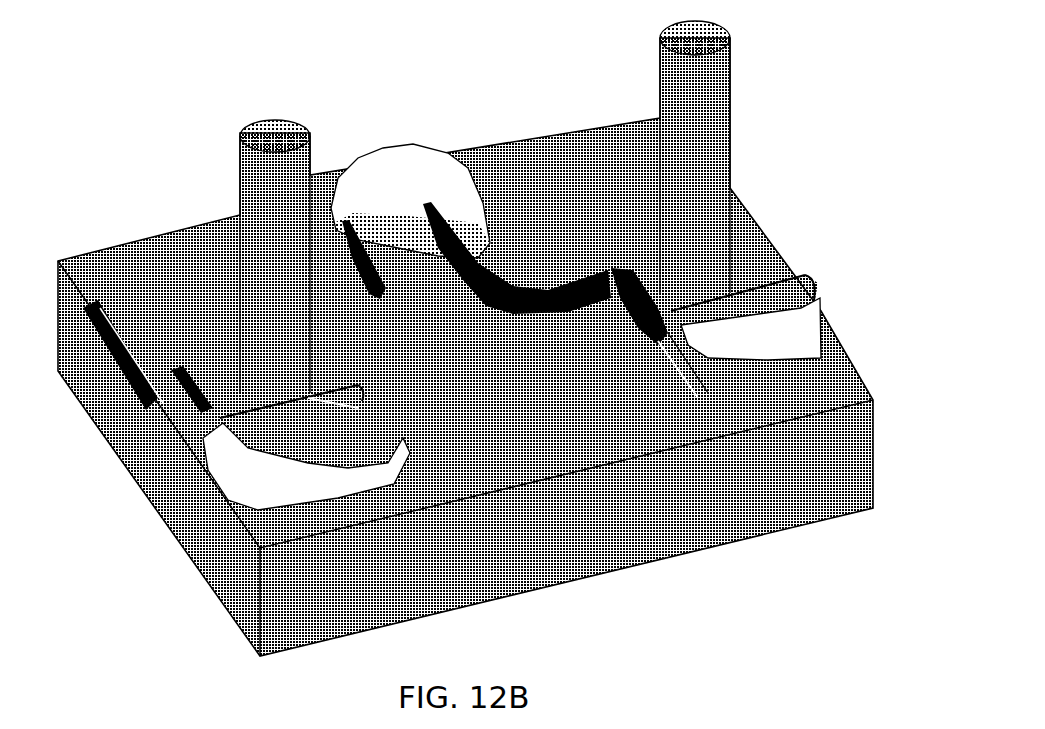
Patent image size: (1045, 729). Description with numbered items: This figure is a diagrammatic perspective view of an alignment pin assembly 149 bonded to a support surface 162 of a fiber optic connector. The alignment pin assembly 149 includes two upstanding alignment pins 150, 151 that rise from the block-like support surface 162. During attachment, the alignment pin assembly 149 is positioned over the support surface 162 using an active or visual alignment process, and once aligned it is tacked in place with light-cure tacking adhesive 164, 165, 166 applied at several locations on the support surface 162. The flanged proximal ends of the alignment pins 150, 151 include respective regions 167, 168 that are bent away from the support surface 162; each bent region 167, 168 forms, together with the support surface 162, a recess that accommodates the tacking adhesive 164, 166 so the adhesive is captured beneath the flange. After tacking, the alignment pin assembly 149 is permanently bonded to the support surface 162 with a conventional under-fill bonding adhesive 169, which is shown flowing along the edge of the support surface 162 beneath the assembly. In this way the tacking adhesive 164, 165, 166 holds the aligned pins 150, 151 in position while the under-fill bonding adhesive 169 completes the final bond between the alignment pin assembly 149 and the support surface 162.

The alignment pin assembly 149 is at (192, 79).
The alignment pin 150 is at (198, 179).
The alignment pin 151 is at (744, 122).
The support surface 162 is at (511, 386).
The light-cure tacking adhesive 164 is at (220, 465).
The light-cure tacking adhesive 165 is at (390, 146).
The light-cure tacking adhesive 166 is at (822, 327).
The bent region of flanged proximal end 167 is at (345, 400).
The bent region of flanged proximal end 168 is at (703, 317).
The under-fill bonding adhesive 169 is at (157, 403).